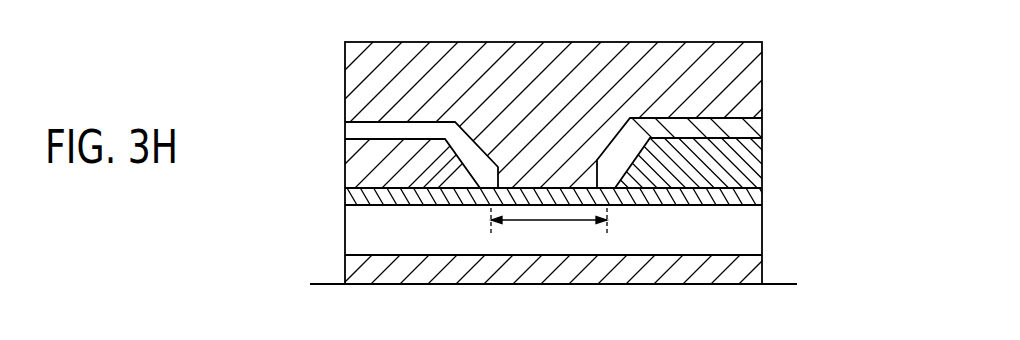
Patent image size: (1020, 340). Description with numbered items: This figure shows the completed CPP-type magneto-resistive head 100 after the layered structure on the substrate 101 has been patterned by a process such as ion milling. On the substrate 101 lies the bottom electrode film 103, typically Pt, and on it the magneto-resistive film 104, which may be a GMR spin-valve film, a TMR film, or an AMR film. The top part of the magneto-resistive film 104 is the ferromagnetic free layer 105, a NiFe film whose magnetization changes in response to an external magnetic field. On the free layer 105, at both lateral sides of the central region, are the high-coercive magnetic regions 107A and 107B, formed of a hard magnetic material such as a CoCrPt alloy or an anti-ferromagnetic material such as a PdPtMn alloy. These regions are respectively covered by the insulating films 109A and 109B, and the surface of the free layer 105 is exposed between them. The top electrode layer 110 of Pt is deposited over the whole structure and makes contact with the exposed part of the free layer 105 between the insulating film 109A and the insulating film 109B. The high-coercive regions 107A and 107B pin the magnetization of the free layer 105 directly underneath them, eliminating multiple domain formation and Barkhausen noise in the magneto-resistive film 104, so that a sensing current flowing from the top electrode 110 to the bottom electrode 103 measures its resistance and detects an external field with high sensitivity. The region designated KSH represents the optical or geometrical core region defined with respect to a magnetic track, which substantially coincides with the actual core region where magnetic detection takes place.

The magneto-resistive head 100 is at (460, 15).
The substrate 101 is at (743, 297).
The bottom electrode film 103 is at (743, 268).
The magneto-resistive film 104 is at (767, 253).
The ferromagnetic free layer 105 is at (762, 188).
The high-coercive magnetic region 107A is at (698, 150).
The high-coercive magnetic region 107B is at (356, 165).
The insulating film 109A is at (643, 125).
The insulating film 109B is at (356, 134).
The top electrode layer 110 is at (688, 58).
The optical core region KSH is at (549, 227).